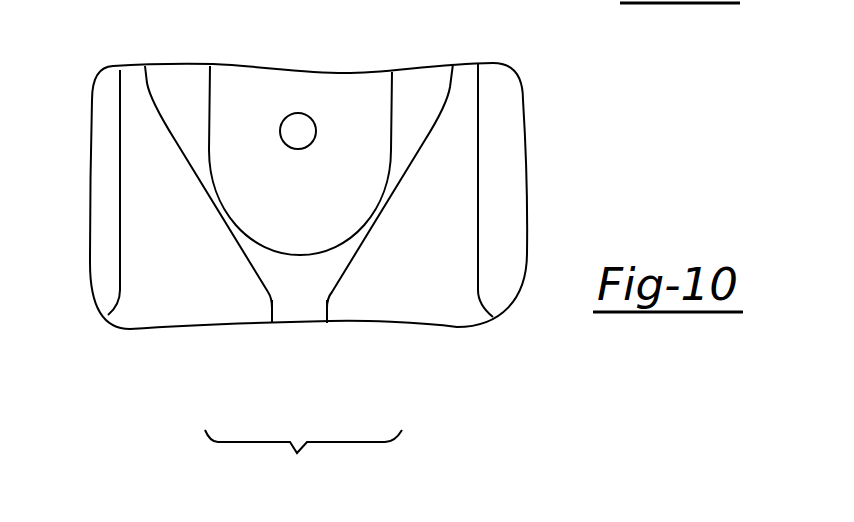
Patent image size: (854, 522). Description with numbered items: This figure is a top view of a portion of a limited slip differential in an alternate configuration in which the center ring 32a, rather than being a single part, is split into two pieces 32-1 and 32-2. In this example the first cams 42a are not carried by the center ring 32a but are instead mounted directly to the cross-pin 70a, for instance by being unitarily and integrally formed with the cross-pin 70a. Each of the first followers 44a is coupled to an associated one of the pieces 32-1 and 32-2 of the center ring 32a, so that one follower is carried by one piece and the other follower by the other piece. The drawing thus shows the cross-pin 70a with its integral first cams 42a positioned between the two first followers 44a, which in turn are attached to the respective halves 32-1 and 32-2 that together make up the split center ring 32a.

The cross-pin 70a is at (353, 110).
The first cams 42a is at (230, 218).
The first followers 44a is at (193, 170).
The piece of the center ring 32-1 is at (230, 300).
The piece of the center ring 32-2 is at (368, 300).
The center ring 32a is at (303, 459).